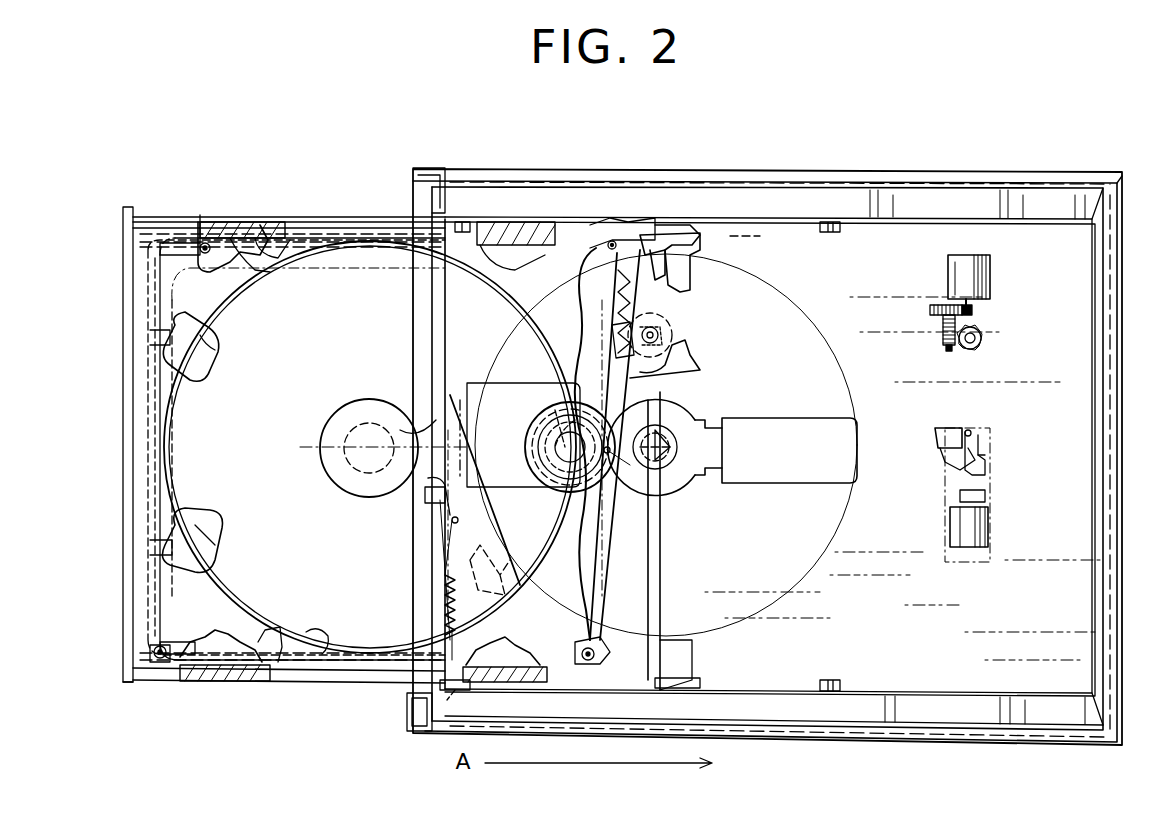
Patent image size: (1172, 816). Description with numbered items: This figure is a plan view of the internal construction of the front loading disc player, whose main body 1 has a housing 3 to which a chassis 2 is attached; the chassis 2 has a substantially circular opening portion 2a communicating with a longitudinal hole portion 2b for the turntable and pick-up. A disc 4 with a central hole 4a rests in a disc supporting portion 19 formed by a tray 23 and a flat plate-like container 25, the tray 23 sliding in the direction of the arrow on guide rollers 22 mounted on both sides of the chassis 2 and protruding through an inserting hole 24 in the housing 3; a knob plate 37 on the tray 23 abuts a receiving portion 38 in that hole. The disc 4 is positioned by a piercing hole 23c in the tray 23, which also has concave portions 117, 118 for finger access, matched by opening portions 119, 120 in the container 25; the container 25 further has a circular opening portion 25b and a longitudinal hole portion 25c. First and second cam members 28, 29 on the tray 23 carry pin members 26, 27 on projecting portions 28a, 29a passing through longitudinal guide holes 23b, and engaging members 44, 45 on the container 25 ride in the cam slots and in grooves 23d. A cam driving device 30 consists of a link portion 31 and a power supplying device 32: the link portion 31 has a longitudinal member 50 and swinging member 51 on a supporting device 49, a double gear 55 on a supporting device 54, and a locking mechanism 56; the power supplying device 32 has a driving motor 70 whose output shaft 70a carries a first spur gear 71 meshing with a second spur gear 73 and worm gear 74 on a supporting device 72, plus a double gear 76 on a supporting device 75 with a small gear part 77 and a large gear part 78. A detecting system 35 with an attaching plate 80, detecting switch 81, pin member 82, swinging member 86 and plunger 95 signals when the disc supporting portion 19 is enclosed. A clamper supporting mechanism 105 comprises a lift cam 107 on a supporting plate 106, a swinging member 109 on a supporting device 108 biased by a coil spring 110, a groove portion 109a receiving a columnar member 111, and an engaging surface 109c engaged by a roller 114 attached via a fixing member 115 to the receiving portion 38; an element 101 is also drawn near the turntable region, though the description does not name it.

The main body 1 is at (870, 168).
The chassis 2 is at (1085, 376).
The opening portion 2a is at (690, 496).
The longitudinal hole portion 2b is at (778, 483).
The housing 3 is at (1122, 588).
The disc 4 is at (160, 459).
The central hole 4a is at (348, 448).
The disc supporting portion 19 is at (124, 491).
The guide rollers 22 is at (462, 222).
The tray 23 is at (160, 266).
The longitudinal guide holes 23b is at (172, 243).
The piercing hole 23c is at (325, 657).
The grooves 23d is at (245, 222).
The inserting hole 24 is at (414, 716).
The container 25 is at (155, 418).
The opening portion 25b is at (345, 401).
The longitudinal hole portion 25c is at (436, 416).
The pin member 26 is at (222, 260).
The pin member 27 is at (150, 650).
The first cam member 28 is at (272, 260).
The projecting portion 28a is at (210, 240).
The second cam member 29 is at (278, 626).
The projecting portion 29a is at (160, 680).
The cam driving device 30 is at (767, 300).
The link portion 31 is at (697, 332).
The power supplying device 32 is at (1008, 286).
The detecting system 35 is at (696, 440).
The knob plate 37 is at (123, 670).
The receiving portion 38 is at (425, 208).
The engaging member 44 is at (262, 268).
The engaging member 45 is at (208, 642).
The supporting device 49 is at (612, 453).
The longitudinal member 50 is at (660, 268).
The swinging member 51 is at (690, 373).
The supporting device 54 is at (660, 338).
The double gear 55 is at (675, 323).
The locking mechanism 56 is at (602, 332).
The driving motor 70 is at (960, 270).
The output shaft 70a is at (975, 300).
The first spur gear 71 is at (972, 308).
The supporting device 72 is at (940, 353).
The second spur gear 73 is at (930, 308).
The worm gear 74 is at (943, 330).
The supporting device 75 is at (983, 336).
The double gear 76 is at (960, 362).
The small gear part 77 is at (978, 350).
The large gear part 78 is at (985, 348).
The attaching plate 80 is at (975, 562).
The detecting switch 81 is at (935, 438).
The pin member 82 is at (690, 456).
The swinging member 86 is at (985, 445).
The plunger 95 is at (950, 530).
The turntable 101 is at (535, 396).
The clamper supporting mechanism 105 is at (408, 550).
The supporting plate 106 is at (455, 318).
The lift cam 107 is at (465, 383).
The supporting device 108 is at (390, 693).
The swinging member 109 is at (436, 590).
The groove portion 109a is at (500, 573).
The engaging surface 109c is at (460, 468).
The coil spring 110 is at (430, 600).
The columnar member 111 is at (480, 538).
The roller 114 is at (435, 513).
The fixing member 115 is at (425, 503).
The concave portion 117 is at (150, 336).
The concave portion 118 is at (150, 548).
The opening portion 119 is at (210, 353).
The opening portion 120 is at (205, 528).